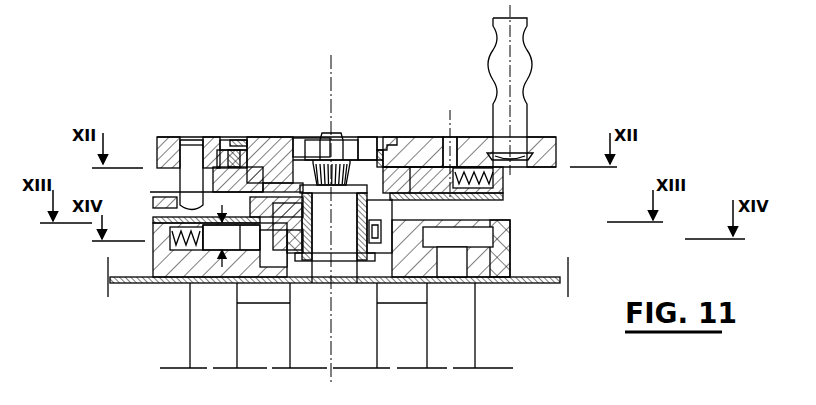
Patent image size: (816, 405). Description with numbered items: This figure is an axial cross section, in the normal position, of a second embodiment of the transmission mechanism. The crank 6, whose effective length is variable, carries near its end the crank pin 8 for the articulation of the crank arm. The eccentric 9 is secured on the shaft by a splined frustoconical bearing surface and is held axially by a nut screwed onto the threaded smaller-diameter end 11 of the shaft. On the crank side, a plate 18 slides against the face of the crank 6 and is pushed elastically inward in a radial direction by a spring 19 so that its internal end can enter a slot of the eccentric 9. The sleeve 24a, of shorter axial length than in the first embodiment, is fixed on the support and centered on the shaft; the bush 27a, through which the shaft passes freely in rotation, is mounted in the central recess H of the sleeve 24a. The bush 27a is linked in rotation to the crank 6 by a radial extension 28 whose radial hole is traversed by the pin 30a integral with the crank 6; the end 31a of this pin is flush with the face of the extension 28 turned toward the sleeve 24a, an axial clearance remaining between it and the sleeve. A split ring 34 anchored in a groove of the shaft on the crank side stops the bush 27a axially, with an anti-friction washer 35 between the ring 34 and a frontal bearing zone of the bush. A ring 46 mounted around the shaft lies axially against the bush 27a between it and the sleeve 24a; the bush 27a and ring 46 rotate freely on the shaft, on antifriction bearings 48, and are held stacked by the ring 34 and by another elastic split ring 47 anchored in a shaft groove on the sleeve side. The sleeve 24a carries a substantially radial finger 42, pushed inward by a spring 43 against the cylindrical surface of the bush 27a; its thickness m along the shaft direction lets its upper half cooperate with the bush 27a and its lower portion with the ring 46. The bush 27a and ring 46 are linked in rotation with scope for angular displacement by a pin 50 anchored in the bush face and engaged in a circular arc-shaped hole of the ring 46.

The crank 6 is at (413, 140).
The crank pin 8 is at (518, 80).
The eccentric 9 is at (279, 155).
The end of the shaft 11 is at (323, 133).
The plate 18 is at (427, 143).
The spring 19 is at (490, 180).
The sleeve 24a is at (167, 257).
The bush 27a is at (440, 270).
The radial extension 28 is at (260, 187).
The pin 30a is at (187, 157).
The end of the pin 31a is at (208, 157).
The split ring 34 is at (357, 162).
The anti-friction washer 35 is at (378, 147).
The finger 42 is at (240, 237).
The spring 43 is at (173, 237).
The ring 46 is at (292, 253).
The elastic split ring 47 is at (358, 258).
The antifriction bearings 48 is at (320, 253).
The pin 50 is at (427, 283).
The central recess H is at (397, 257).
The thickness of the finger m is at (217, 250).